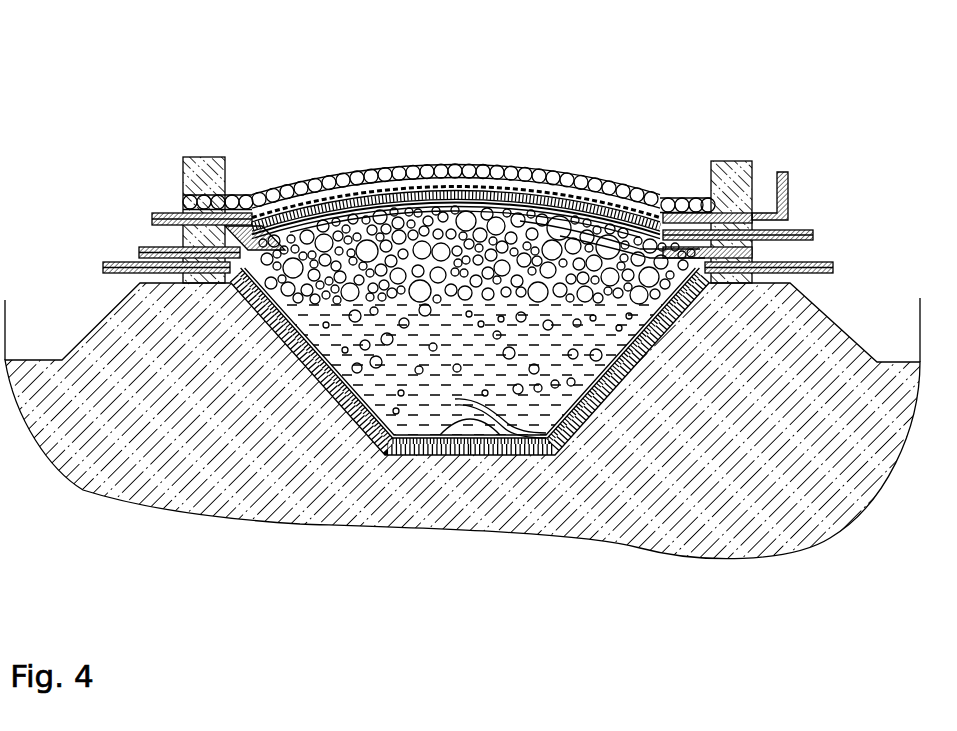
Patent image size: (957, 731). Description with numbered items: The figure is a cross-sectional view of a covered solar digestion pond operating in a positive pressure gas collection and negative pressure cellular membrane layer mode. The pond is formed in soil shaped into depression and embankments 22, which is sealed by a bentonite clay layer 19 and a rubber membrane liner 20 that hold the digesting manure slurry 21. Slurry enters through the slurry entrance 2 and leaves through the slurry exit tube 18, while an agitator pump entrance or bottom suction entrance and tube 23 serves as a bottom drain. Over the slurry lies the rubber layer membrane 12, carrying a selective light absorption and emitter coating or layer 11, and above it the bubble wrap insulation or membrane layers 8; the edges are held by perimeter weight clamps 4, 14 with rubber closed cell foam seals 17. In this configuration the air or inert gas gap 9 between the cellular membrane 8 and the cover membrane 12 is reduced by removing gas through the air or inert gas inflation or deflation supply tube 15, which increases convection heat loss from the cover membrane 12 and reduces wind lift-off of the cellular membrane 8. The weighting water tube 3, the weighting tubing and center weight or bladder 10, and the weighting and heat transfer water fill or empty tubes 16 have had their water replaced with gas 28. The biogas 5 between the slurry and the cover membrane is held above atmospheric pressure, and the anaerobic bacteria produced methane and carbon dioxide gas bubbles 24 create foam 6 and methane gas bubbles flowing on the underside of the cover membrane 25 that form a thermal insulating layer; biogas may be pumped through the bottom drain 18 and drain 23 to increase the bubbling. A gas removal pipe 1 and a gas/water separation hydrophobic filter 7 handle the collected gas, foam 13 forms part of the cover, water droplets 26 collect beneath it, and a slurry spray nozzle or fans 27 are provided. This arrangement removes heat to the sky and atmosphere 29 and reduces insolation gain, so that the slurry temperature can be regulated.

The gas removal pipe 1 is at (103, 263).
The slurry entrance 2 is at (139, 252).
The weighting water tube 3 is at (152, 218).
The perimeter weight clamp 4 is at (200, 160).
The biogas 5 is at (264, 250).
The foam 6 is at (327, 222).
The gas/water separation hydrophobic filter 7 is at (355, 245).
The bubble wrap insulation or membrane layers 8 is at (418, 168).
The air or inert gas gap between the bubble wrap and cover membrane 9 is at (617, 207).
The weighting tubing and center weight or bladder 10 is at (532, 197).
The selective light absorption and emitter coating or layer 11 is at (577, 217).
The rubber layer membrane 12 is at (588, 238).
The foam 13 is at (647, 240).
The perimeter weight clamp 14 is at (728, 173).
The air or inert gas inflation or deflation supply tube 15 is at (788, 198).
The weighting and heat transfer water fill or empty tubes 16 is at (813, 237).
The rubber closed cell foam seals 17 is at (752, 258).
The slurry exit tube 18 is at (833, 270).
The bentonite clay layer 19 is at (713, 297).
The rubber membrane liner 20 is at (655, 300).
The digesting manure slurry 21 is at (623, 350).
The soil shaped into depression and embankments 22 is at (598, 458).
The agitator pump entrance or bottom suction entrance and tube 23 is at (390, 445).
The anaerobic bacteria produced methane and carbon dioxide gas bubbles 24 is at (423, 370).
The methane gas bubbles flowing on underside of cover membrane 25 is at (258, 300).
The water droplets 26 is at (245, 295).
The slurry spray nozzle or fans 27 is at (233, 290).
The gas in weight water tube and bladder 28 is at (480, 195).
The sky and atmosphere 29 is at (449, 129).